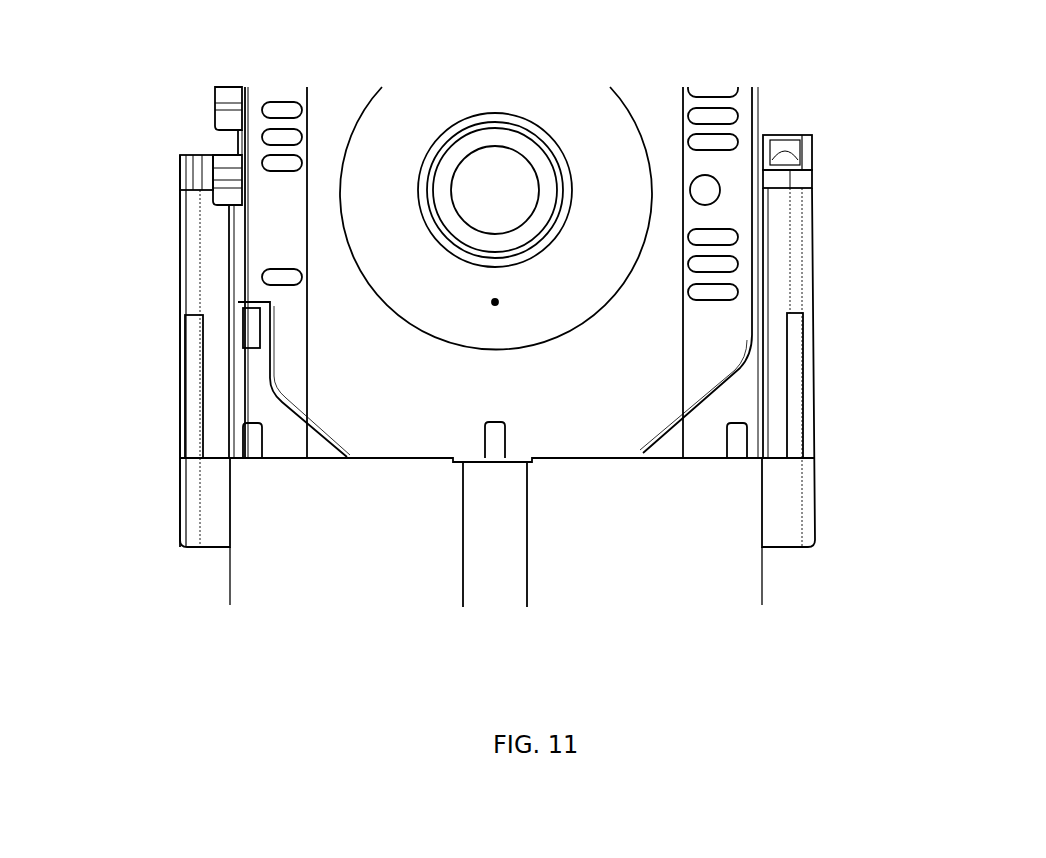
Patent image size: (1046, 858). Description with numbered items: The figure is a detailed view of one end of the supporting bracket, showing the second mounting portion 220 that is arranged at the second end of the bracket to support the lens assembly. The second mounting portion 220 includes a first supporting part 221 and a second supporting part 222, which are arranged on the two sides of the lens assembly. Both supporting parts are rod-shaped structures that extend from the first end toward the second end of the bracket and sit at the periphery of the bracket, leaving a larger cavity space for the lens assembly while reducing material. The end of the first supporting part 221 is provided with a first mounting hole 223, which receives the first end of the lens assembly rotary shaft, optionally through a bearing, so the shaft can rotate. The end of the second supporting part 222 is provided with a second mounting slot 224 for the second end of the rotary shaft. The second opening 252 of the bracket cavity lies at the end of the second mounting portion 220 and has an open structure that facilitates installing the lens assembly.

The second mounting portion 220 is at (213, 302).
The first supporting part 221 is at (190, 154).
The second supporting part 222 is at (810, 136).
The first mounting hole 223 is at (178, 168).
The second mounting slot 224 is at (812, 168).
The second opening 252 is at (217, 155).